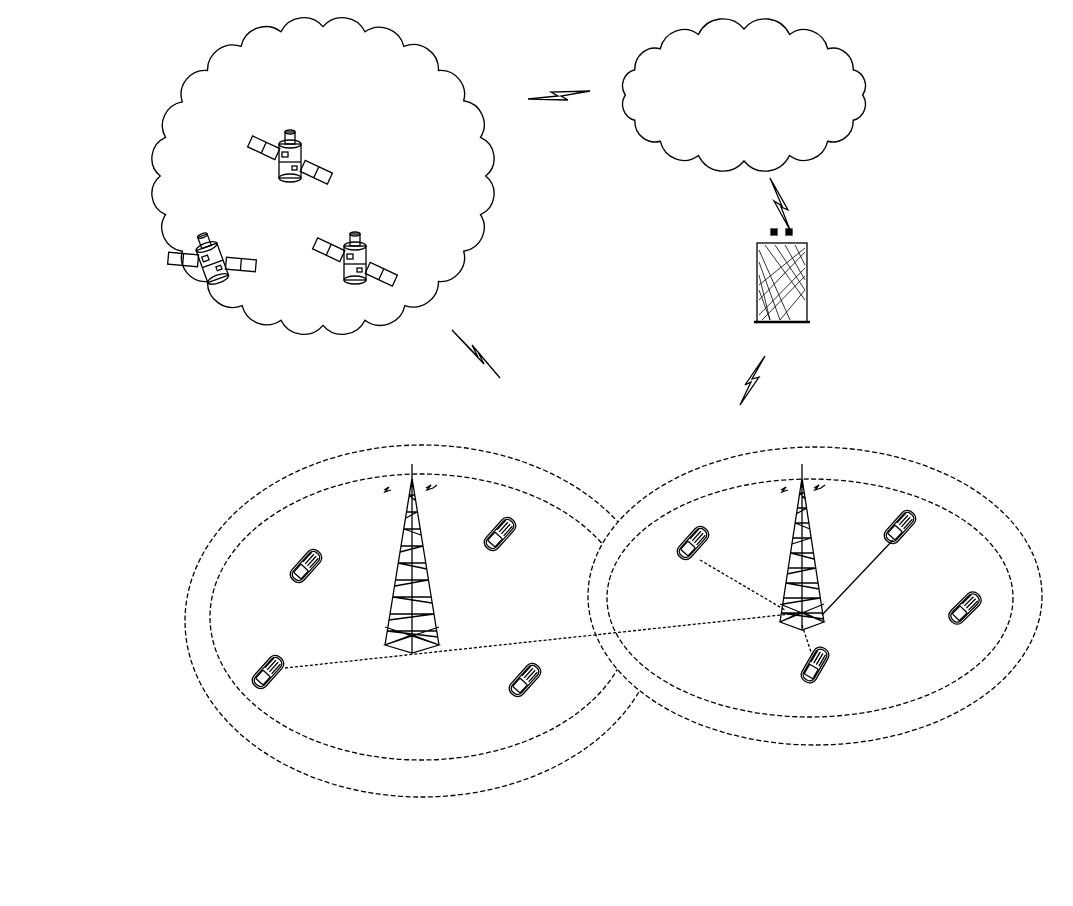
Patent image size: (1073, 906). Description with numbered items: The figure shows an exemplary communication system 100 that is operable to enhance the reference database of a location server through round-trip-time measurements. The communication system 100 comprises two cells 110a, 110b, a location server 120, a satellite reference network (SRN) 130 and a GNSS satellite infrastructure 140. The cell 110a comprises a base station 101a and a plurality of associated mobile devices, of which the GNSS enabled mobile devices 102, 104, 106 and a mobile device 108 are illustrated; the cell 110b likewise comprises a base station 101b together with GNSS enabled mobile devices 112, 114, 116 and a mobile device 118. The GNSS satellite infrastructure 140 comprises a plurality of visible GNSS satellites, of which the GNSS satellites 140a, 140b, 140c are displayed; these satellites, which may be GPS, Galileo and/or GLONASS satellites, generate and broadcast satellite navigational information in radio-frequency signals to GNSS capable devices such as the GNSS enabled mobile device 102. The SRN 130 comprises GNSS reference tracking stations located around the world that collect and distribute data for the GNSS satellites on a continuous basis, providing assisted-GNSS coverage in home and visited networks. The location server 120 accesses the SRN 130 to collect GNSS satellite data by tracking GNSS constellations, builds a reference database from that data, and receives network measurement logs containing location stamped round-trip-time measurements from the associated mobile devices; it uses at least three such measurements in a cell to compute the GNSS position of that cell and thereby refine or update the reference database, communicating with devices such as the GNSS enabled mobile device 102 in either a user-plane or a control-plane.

The communication system 100 is at (962, 149).
The base station 101a is at (427, 560).
The base station 101b is at (826, 560).
The GNSS enabled mobile device 102 is at (286, 660).
The GNSS enabled mobile device 104 is at (520, 522).
The GNSS enabled mobile device 106 is at (548, 684).
The mobile device 108 is at (320, 558).
The cell 110a is at (523, 460).
The cell 110b is at (908, 462).
The GNSS enabled mobile device 112 is at (712, 540).
The GNSS enabled mobile device 114 is at (920, 520).
The GNSS enabled mobile device 116 is at (834, 660).
The mobile device 118 is at (980, 601).
The location server 120 is at (808, 272).
The satellite reference network (SRN) 130 is at (806, 32).
The GNSS satellite infrastructure 140 is at (225, 50).
The GNSS satellite 140a is at (279, 228).
The GNSS satellite 140b is at (335, 178).
The GNSS satellite 140c is at (395, 286).